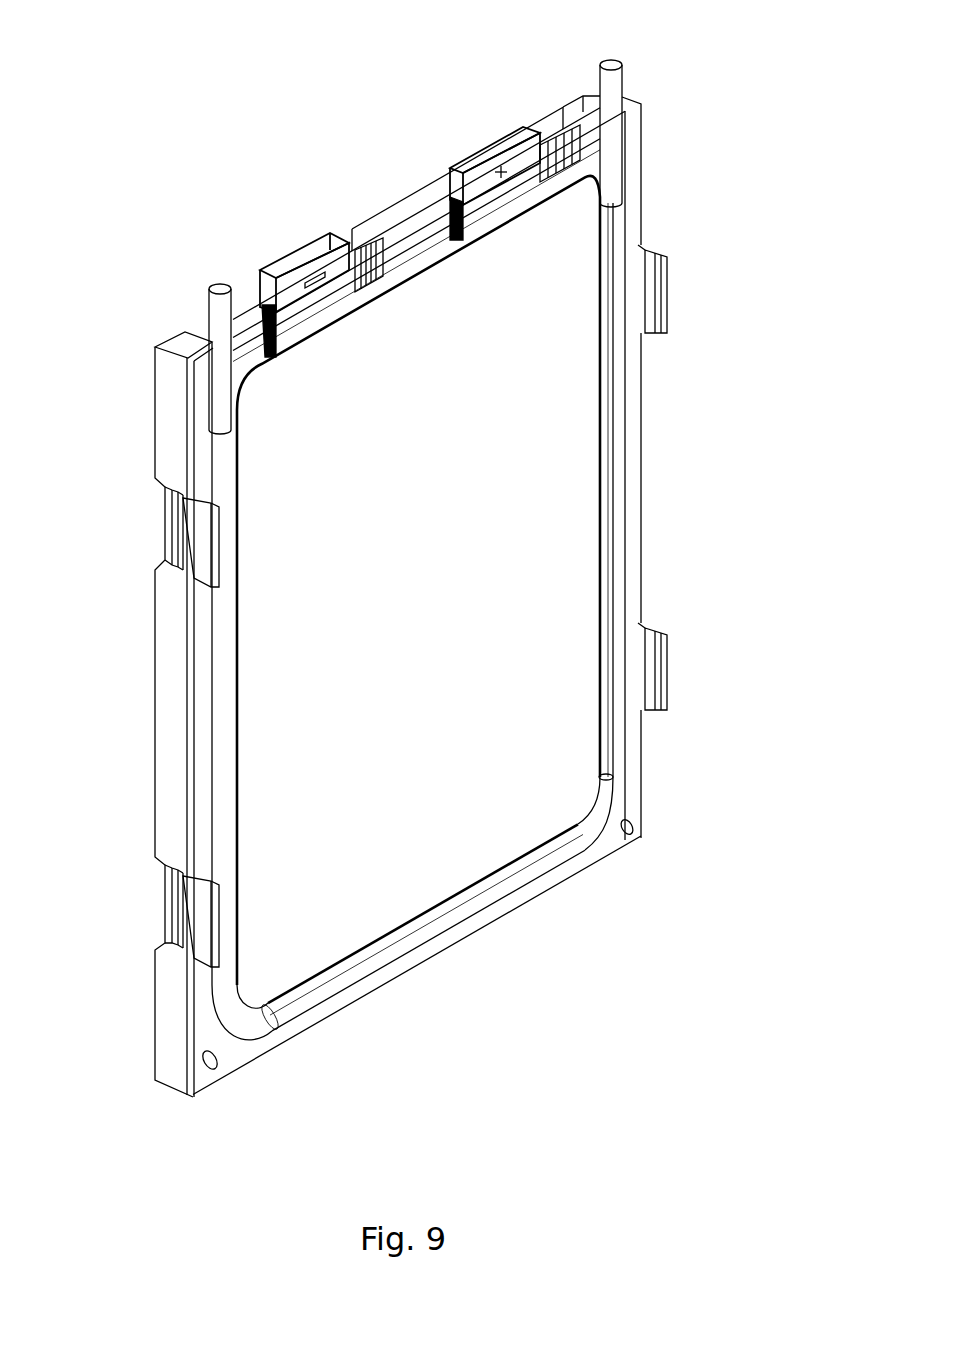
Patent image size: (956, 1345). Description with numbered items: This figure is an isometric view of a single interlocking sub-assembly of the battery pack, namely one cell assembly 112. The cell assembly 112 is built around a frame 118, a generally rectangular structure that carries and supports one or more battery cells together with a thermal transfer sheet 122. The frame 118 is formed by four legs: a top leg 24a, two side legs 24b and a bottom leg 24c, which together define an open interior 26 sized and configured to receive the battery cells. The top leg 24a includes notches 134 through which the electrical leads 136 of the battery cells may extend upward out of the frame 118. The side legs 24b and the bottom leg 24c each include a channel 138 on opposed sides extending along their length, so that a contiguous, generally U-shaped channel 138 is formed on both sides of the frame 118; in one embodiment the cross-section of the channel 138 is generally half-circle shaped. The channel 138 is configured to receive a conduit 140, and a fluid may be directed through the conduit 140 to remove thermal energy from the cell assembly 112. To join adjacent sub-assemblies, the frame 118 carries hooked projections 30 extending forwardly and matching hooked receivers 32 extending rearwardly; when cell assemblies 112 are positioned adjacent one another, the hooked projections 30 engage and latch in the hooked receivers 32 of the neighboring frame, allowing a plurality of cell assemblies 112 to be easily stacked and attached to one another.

The cell assembly 112 is at (250, 108).
The frame 118 is at (148, 670).
The top leg 24a is at (403, 203).
The side legs 24b is at (155, 795).
The bottom leg 24c is at (437, 945).
The open interior 26 is at (524, 484).
The thermal transfer sheet 122 is at (419, 685).
The conduit 140 is at (225, 377).
The channel 138 is at (205, 348).
The electrical leads 136 is at (310, 270).
The notches 134 is at (248, 298).
The hooked projections 30 is at (667, 306).
The hooked receivers 32 is at (173, 495).